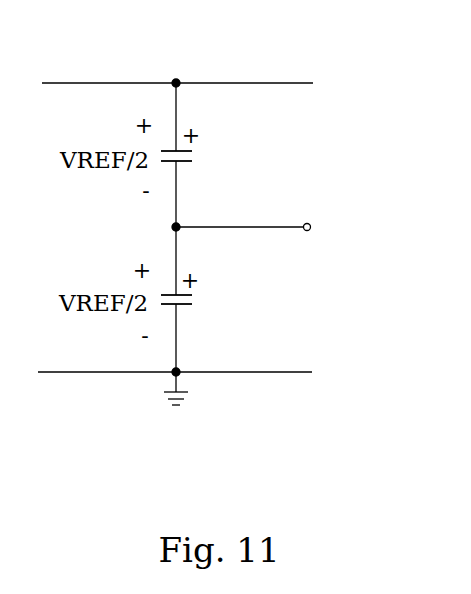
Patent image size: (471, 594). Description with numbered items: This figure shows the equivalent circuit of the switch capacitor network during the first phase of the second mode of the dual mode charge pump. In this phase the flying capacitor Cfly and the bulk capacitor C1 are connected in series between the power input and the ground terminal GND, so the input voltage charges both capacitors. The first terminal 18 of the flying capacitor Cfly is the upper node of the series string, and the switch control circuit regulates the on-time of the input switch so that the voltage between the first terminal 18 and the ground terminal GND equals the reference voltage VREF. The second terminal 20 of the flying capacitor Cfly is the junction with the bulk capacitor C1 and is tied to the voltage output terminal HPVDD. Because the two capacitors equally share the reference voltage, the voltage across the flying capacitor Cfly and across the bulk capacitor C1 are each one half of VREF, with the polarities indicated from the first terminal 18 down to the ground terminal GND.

The first terminal of the flying capacitor 18 is at (176, 79).
The second terminal of the flying capacitor 20 is at (172, 227).
The flying capacitor Cfly is at (202, 162).
The bulk capacitor C1 is at (195, 305).
The voltage output terminal HPVDD is at (357, 228).
The ground terminal GND is at (173, 404).